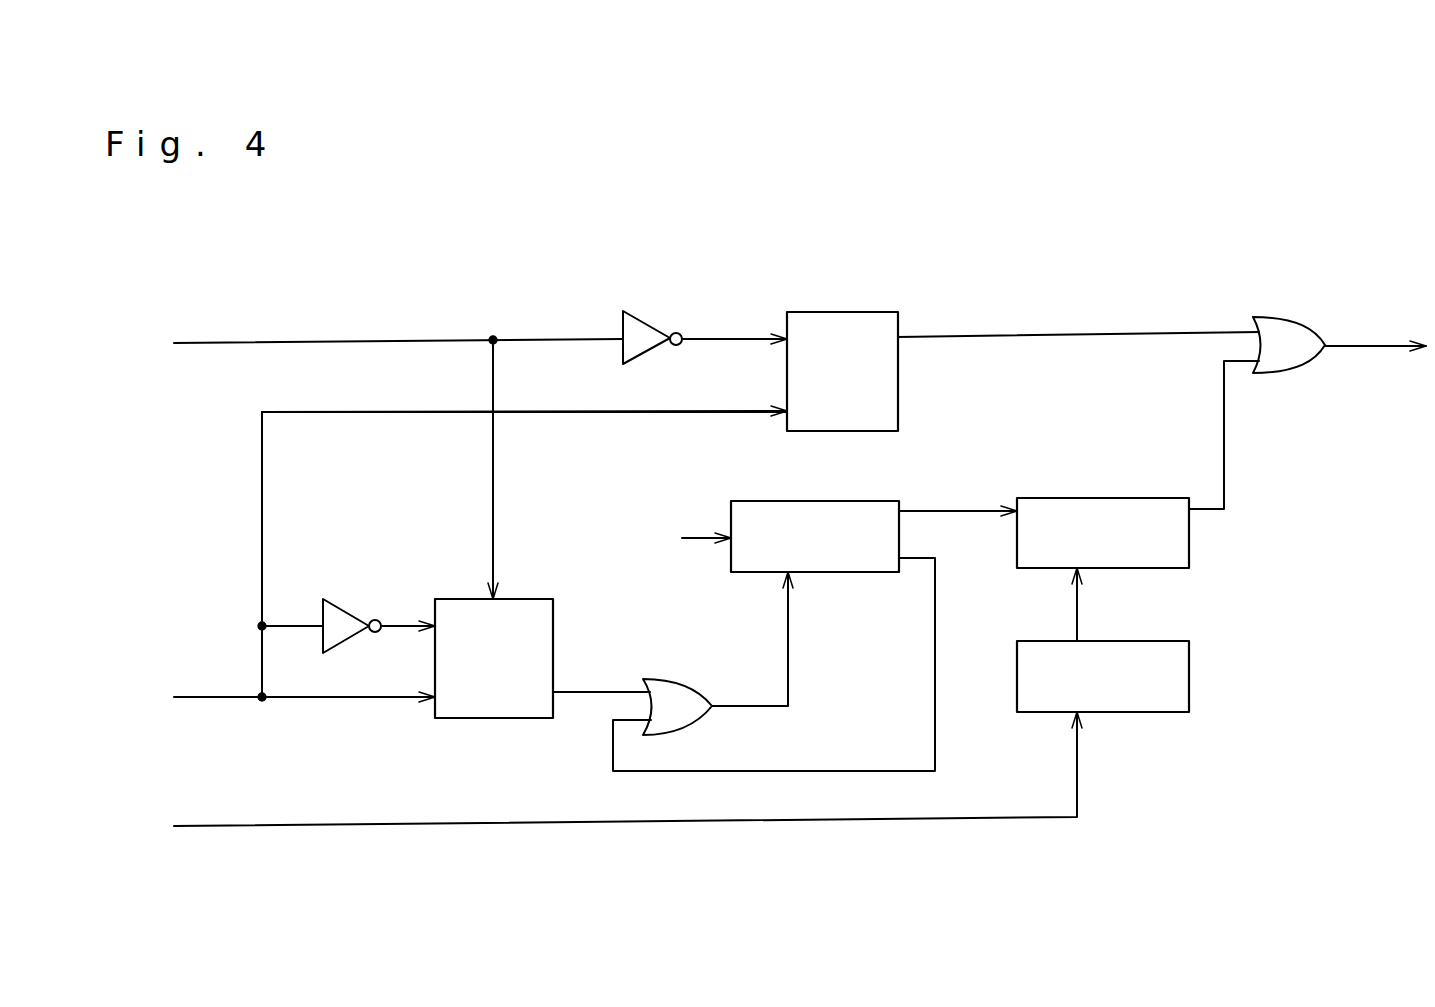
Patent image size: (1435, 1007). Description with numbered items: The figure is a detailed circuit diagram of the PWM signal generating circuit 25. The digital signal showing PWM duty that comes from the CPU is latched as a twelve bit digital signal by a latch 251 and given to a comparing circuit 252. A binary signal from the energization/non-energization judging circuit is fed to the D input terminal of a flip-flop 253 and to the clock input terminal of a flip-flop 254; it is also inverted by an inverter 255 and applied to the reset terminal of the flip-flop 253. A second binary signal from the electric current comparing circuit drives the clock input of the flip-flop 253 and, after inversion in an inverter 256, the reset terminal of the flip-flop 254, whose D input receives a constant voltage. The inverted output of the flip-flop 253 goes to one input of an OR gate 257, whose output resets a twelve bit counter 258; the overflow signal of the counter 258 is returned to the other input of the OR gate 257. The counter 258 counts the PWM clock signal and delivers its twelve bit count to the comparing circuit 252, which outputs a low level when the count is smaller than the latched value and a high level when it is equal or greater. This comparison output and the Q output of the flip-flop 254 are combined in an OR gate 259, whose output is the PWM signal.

The PWM signal generating circuit 25 is at (1122, 246).
The latch 251 is at (1189, 661).
The comparing circuit 252 is at (1189, 533).
The flip-flop 253 is at (455, 579).
The flip-flop 254 is at (836, 312).
The inverter 255 is at (362, 584).
The inverter 256 is at (649, 324).
The OR gate 257 is at (681, 680).
The twelve bit counter 258 is at (800, 501).
The OR gate 259 is at (1282, 318).